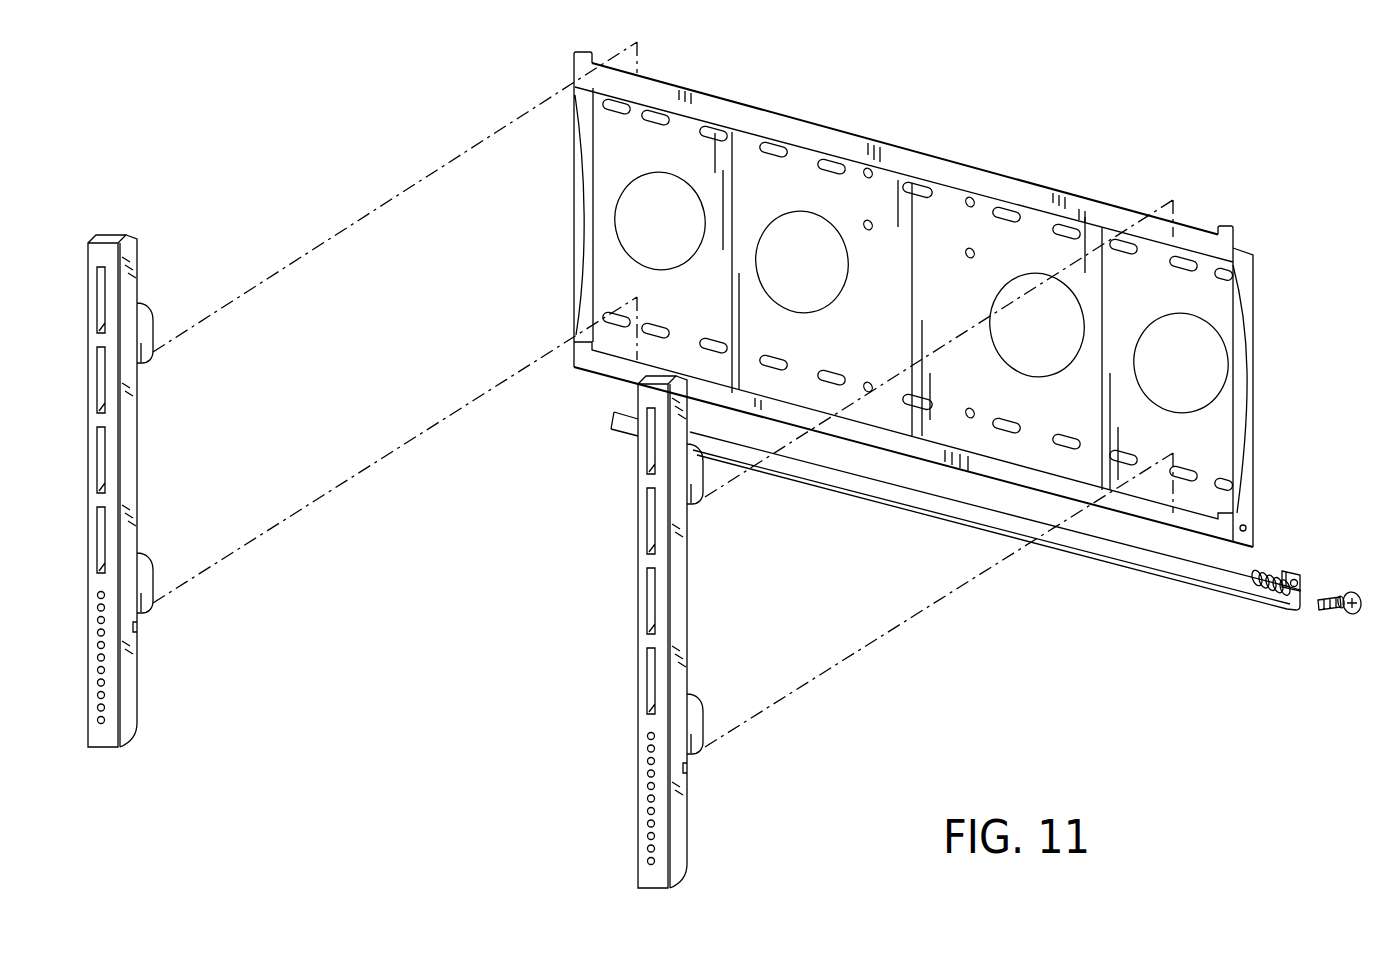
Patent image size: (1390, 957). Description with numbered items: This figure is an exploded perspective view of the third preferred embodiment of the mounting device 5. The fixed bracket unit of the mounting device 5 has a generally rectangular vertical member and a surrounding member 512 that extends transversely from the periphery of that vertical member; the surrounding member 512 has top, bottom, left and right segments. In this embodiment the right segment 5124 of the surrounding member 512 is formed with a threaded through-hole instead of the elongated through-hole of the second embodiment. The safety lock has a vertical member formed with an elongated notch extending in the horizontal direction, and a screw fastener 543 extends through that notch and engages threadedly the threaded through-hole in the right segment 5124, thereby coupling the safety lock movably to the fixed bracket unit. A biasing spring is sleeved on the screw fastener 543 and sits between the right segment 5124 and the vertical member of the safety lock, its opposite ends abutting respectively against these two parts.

The mounting device 5 is at (338, 114).
The surrounding member 512 is at (1245, 287).
The right segment 5124 is at (1247, 448).
The screw fastener 543 is at (1337, 604).